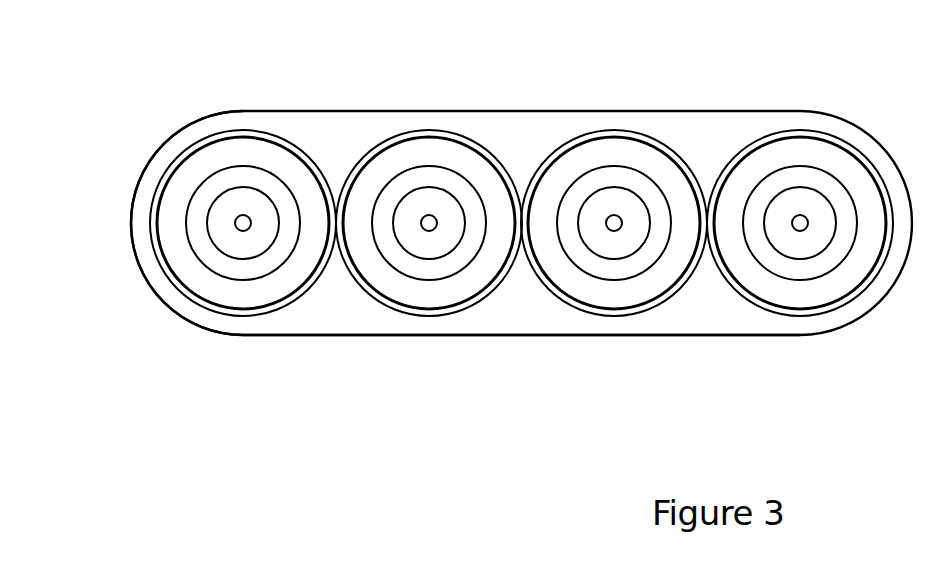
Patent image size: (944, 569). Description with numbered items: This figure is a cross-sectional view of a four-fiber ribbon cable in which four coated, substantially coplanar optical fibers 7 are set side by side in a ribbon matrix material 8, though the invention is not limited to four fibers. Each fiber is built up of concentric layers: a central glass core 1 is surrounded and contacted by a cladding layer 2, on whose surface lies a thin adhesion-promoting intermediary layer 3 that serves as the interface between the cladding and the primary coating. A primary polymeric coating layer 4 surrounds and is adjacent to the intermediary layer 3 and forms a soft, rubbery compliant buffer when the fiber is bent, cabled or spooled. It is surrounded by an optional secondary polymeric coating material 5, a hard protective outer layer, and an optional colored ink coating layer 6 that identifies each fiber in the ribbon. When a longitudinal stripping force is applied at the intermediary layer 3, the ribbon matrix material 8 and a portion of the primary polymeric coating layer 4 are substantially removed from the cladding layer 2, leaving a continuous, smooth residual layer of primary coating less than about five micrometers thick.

The central core 1 is at (240, 226).
The cladding layer 2 is at (222, 220).
The adhesion-promoting intermediary layer 3 is at (215, 200).
The primary polymeric coating layer 4 is at (238, 177).
The secondary polymeric coating material 5 is at (173, 206).
The colored ink coating layer 6 is at (293, 147).
The coated, substantially coplanar optical fibers 7 is at (251, 324).
The ribbon matrix material 8 is at (703, 136).